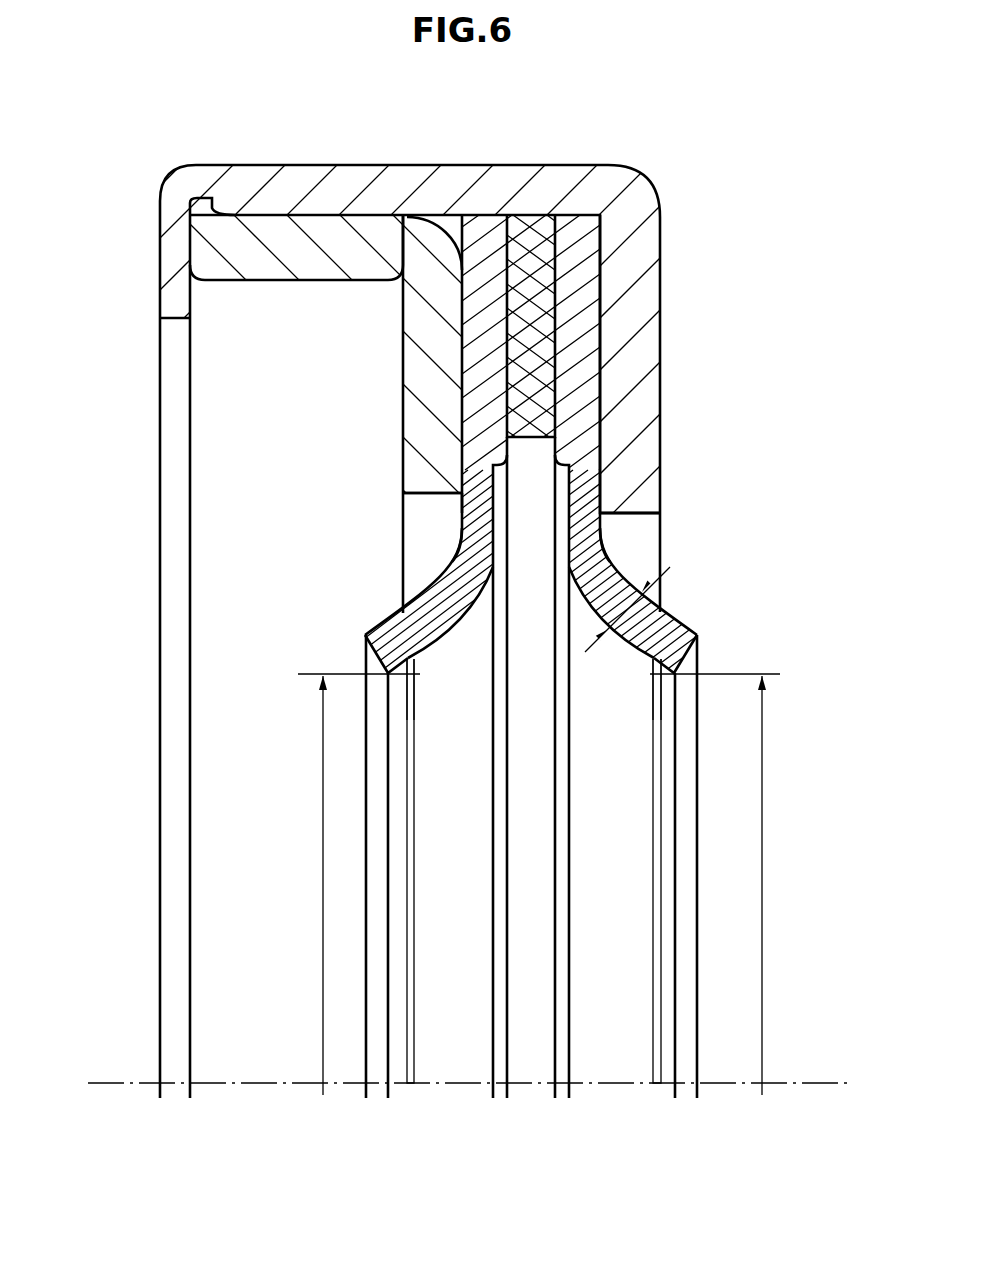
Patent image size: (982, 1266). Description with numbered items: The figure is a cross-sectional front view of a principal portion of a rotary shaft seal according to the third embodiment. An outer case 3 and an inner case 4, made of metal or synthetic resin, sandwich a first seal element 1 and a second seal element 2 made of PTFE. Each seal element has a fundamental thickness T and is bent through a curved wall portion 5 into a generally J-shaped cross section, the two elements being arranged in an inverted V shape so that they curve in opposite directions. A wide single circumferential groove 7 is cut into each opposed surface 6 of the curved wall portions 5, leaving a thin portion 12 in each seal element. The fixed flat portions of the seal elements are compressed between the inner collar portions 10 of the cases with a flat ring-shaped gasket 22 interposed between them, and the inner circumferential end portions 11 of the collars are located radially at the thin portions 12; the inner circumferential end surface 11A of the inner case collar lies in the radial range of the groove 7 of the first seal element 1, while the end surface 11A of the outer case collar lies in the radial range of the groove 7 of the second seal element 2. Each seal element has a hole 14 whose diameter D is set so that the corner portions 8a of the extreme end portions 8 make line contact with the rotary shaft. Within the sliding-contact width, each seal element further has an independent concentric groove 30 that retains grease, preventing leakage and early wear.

The first seal element 1 is at (395, 630).
The second seal element 2 is at (676, 626).
The outer case 3 is at (640, 293).
The inner case 4 is at (355, 250).
The curved wall portion 5 is at (462, 550).
The opposed surface 6 is at (438, 747).
The single circumferential groove 7 is at (480, 518).
The extreme end portion 8 is at (388, 648).
The corner portion 8a is at (418, 690).
The inner collar portion 10 is at (413, 357).
The inner circumferential end portion 11 is at (420, 475).
The inner circumferential end surface 11A is at (420, 497).
The thin portion 12 is at (462, 472).
The hole 14 is at (388, 738).
The flat ring-shaped gasket 22 is at (527, 252).
The independent concentric groove 30 is at (414, 904).
The fundamental thickness T is at (632, 612).
The diameter D is at (540, 884).